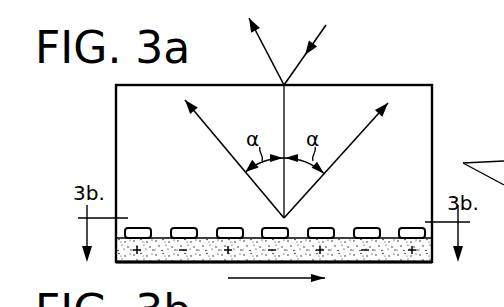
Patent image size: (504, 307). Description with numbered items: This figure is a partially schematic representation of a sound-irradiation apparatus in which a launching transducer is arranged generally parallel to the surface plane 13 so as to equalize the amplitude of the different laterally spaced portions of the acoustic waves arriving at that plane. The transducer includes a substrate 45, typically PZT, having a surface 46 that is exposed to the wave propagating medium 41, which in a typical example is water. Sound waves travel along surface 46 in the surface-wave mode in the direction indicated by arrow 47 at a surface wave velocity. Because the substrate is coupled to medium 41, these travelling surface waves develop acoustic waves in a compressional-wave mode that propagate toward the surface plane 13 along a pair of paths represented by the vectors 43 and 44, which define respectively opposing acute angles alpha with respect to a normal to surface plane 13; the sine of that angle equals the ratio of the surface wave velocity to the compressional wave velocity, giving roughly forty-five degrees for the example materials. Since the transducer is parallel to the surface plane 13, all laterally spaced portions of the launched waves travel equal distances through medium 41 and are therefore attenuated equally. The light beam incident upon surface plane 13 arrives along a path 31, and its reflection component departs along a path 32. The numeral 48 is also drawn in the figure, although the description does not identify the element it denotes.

The surface plane 13 is at (385, 86).
The path 31 is at (300, 62).
The path 32 is at (270, 62).
The wave propagating medium 41 is at (131, 128).
The vector 43 is at (210, 130).
The vector 44 is at (363, 130).
The substrate 45 is at (392, 257).
The surface 46 is at (343, 238).
The arrow 47 is at (283, 265).
The electrode lead 48 is at (356, 276).